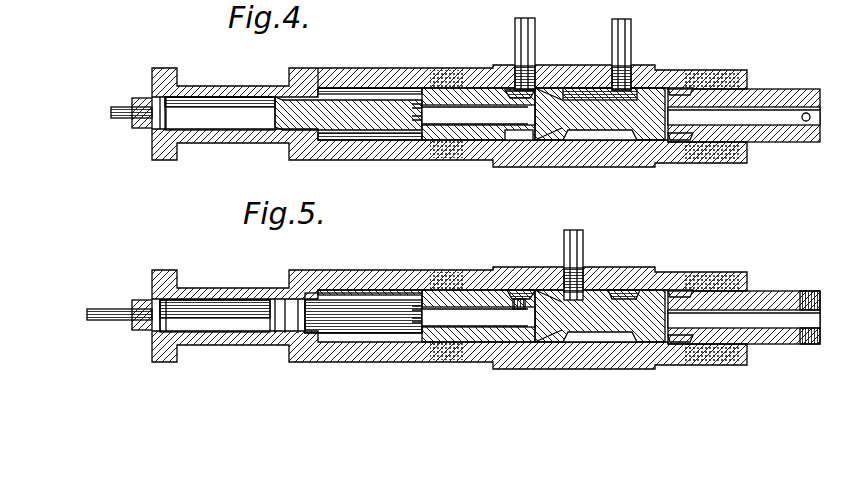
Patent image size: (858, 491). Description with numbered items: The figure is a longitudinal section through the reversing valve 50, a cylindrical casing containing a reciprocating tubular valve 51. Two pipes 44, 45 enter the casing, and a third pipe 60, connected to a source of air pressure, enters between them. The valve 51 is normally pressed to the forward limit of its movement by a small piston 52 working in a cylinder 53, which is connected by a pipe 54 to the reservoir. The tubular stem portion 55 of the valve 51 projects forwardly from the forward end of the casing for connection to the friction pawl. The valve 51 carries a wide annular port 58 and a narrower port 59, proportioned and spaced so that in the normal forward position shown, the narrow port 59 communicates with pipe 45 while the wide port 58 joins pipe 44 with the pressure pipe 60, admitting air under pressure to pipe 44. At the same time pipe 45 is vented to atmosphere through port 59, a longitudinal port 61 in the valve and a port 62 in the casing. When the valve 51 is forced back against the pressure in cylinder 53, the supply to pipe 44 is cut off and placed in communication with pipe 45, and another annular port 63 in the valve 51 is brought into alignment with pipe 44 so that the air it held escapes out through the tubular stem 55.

In FIG. 4, the pipe 44 is at (633, 35).
In FIG. 5, the pipe 44 is at (624, 348).
In FIG. 4, the pipe 45 is at (515, 40).
In FIG. 5, the pipe 45 is at (514, 347).
In FIG. 4, the reversing valve 50 is at (519, 139).
In FIG. 4, the tubular valve 51 is at (552, 133).
In FIG. 5, the tubular valve 51 is at (598, 350).
In FIG. 4, the piston 52 is at (274, 130).
In FIG. 5, the piston 52 is at (363, 347).
In FIG. 5, the cylinder 53 is at (232, 340).
In FIG. 4, the pipe 54 is at (122, 120).
In FIG. 5, the pipe 54 is at (126, 331).
In FIG. 4, the tubular stem portion 55 is at (793, 141).
In FIG. 5, the tubular stem portion 55 is at (744, 300).
In FIG. 4, the wide annular port 58 is at (603, 134).
In FIG. 5, the wide annular port 58 is at (600, 374).
In FIG. 4, the narrow port 59 is at (516, 136).
In FIG. 5, the narrow port 59 is at (478, 350).
In FIG. 4, the pipe 60 is at (577, 90).
In FIG. 5, the pipe 60 is at (592, 265).
In FIG. 4, the longitudinal port 61 is at (460, 117).
In FIG. 5, the longitudinal port 61 is at (466, 355).
In FIG. 4, the port 62 is at (319, 69).
In FIG. 4, the annular port 63 is at (682, 134).
In FIG. 5, the annular port 63 is at (701, 336).